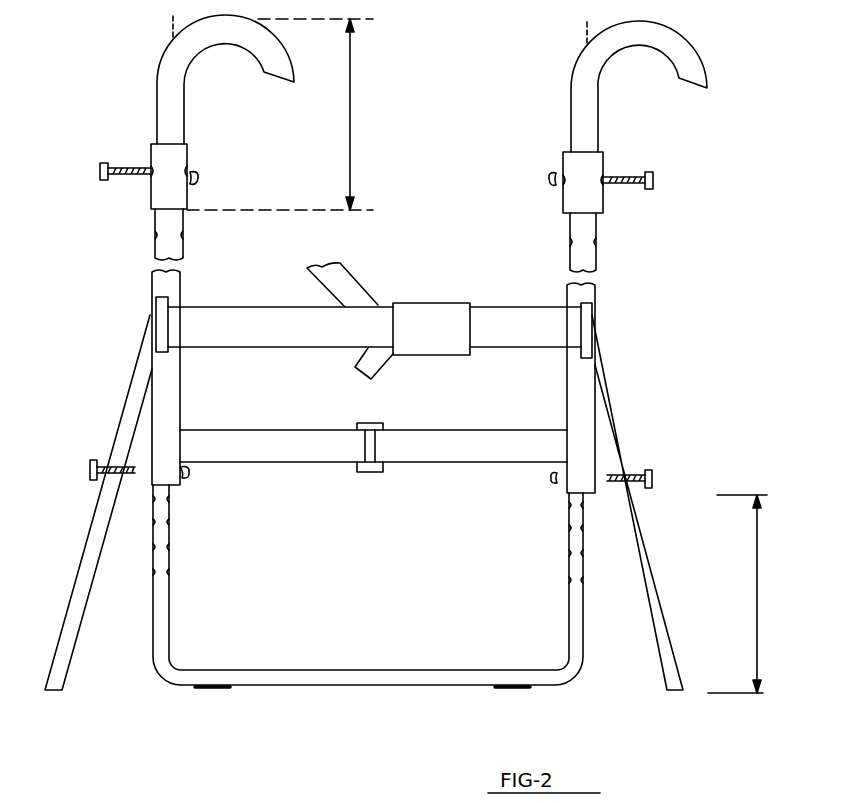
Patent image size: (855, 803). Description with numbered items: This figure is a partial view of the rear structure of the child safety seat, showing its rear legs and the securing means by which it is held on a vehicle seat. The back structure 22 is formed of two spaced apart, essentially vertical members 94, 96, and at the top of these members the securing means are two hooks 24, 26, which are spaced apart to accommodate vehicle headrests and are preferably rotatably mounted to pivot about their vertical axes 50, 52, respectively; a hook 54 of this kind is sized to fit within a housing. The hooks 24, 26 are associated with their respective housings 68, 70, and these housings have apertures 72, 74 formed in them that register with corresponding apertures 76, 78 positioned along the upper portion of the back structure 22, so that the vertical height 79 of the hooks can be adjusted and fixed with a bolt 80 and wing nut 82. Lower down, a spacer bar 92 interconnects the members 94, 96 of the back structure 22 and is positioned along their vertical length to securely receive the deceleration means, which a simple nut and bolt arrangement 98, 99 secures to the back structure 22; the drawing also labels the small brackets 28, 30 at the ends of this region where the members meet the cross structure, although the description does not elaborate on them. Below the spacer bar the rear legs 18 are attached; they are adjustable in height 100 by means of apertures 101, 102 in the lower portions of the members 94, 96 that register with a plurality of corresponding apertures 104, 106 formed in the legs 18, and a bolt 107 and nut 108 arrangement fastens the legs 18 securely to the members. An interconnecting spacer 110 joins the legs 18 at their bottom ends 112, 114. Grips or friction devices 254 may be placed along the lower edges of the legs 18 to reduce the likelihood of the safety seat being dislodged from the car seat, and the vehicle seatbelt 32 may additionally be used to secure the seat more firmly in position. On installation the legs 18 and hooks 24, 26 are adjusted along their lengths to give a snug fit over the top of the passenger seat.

The rear legs 18 is at (168, 622).
The back structure 22 is at (567, 293).
The hook 24 is at (706, 60).
The hook 26 is at (283, 38).
The right bracket 28 is at (592, 308).
The left bracket 30 is at (160, 318).
The seatbelt 32 is at (656, 603).
The vertical axis 50 is at (584, 33).
The vertical axis 52 is at (170, 18).
The hook 54 is at (345, 802).
The housing 68 is at (603, 171).
The housing 70 is at (187, 153).
The aperture 72 is at (603, 183).
The aperture 74 is at (190, 196).
The aperture 76 is at (597, 247).
The aperture 78 is at (184, 237).
The vertical height 79 is at (351, 116).
The bolt 80 is at (99, 165).
The wing nut 82 is at (200, 181).
The spacer bar 92 is at (270, 462).
The spaced apart member 94 is at (567, 411).
The spaced apart member 96 is at (179, 400).
The nut and bolt arrangement 98 is at (383, 424).
The nut and bolt arrangement 99 is at (380, 472).
The height 100 is at (754, 594).
The aperture 101 is at (556, 485).
The aperture 102 is at (172, 500).
The apertures 104 is at (569, 552).
The apertures 106 is at (169, 563).
The bolt 107 is at (90, 470).
The nut 108 is at (190, 479).
The interconnecting spacer 110 is at (320, 670).
The bottom end 112 is at (581, 663).
The bottom end 114 is at (167, 660).
The grips or friction devices 254 is at (345, 274).